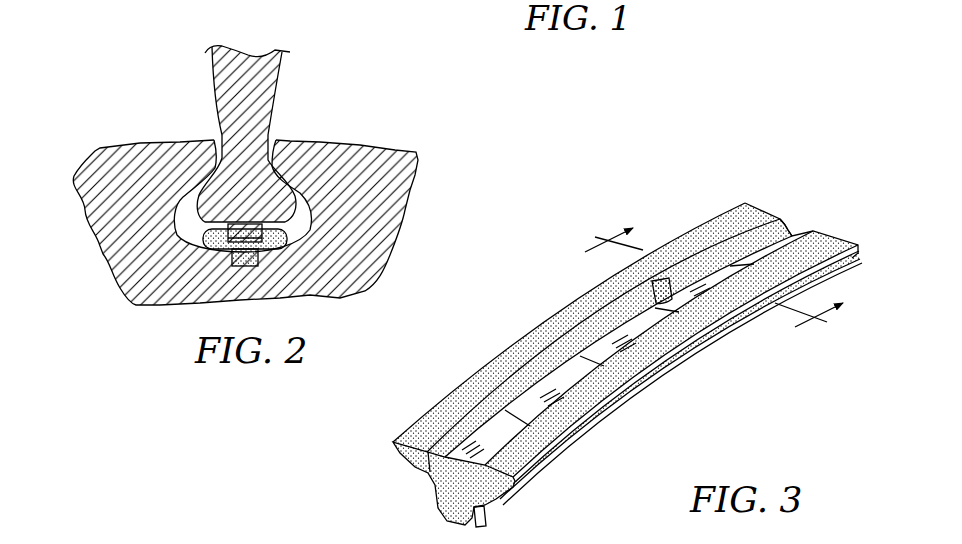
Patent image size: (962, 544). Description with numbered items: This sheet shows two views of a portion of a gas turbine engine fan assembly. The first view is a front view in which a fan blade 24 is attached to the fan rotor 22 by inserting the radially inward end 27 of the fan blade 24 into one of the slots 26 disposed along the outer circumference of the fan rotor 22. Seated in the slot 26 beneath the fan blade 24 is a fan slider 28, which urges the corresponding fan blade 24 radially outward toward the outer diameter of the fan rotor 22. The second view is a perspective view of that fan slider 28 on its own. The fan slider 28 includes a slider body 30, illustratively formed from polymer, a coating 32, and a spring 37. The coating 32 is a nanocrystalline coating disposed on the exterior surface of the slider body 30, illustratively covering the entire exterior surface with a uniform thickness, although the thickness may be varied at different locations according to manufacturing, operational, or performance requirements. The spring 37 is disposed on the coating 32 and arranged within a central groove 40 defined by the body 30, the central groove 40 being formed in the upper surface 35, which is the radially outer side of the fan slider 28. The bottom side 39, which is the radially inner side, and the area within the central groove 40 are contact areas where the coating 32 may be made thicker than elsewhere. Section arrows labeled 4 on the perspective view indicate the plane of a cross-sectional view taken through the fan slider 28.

In FIG. 2, the fan rotor 22 is at (392, 163).
In FIG. 2, the fan blade 24 is at (207, 72).
In FIG. 2, the slot 26 is at (276, 124).
In FIG. 2, the radially inward end 27 is at (187, 222).
In FIG. 2, the fan slider 28 is at (216, 243).
In FIG. 3, the fan slider 28 is at (530, 243).
In FIG. 3, the slider body 30 is at (833, 240).
In FIG. 3, the coating 32 is at (703, 232).
In FIG. 3, the upper surface 35 is at (664, 260).
In FIG. 3, the spring 37 is at (530, 402).
In FIG. 3, the bottom side 39 is at (692, 362).
In FIG. 3, the central groove 40 is at (764, 250).
In FIG. 3, the section line 4- 4 is at (704, 287).